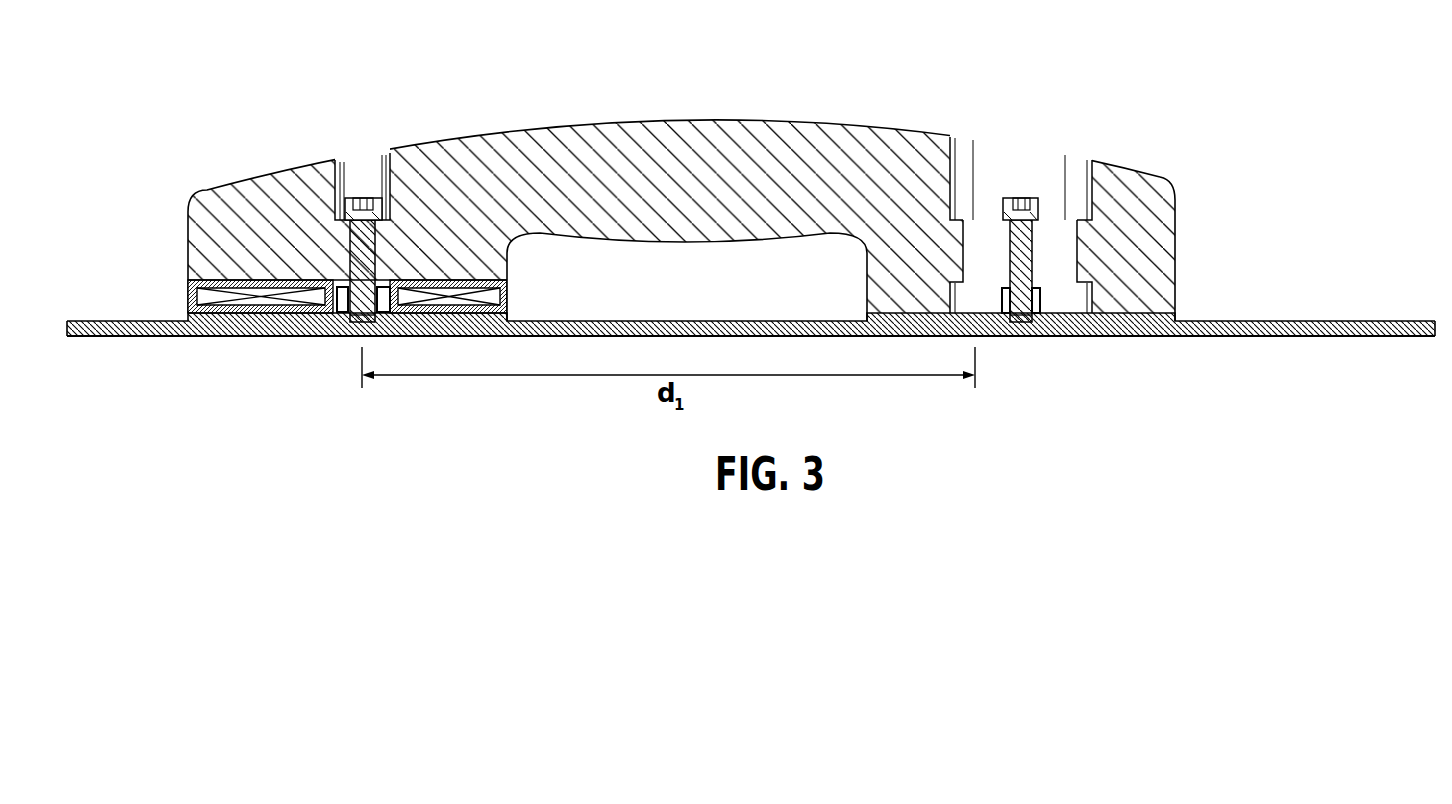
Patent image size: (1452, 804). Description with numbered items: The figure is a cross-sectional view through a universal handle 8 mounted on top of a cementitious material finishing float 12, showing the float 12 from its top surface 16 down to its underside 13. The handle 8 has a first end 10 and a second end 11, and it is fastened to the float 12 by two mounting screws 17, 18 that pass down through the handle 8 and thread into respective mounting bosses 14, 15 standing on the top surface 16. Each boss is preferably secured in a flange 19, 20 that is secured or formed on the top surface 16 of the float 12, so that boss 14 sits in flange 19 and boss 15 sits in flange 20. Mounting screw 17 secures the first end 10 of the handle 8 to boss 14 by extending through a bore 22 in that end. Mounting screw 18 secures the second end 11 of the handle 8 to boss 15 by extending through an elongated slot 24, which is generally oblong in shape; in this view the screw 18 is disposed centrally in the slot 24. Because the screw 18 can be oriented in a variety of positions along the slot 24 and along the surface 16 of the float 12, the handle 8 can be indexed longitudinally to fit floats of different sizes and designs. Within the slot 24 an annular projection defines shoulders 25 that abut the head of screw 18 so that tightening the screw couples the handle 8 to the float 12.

The universal handle 8 is at (751, 209).
The first end of the handle 10 is at (189, 180).
The second end of the handle 11 is at (1181, 171).
The float 12 is at (1388, 313).
The underside of the float 13 is at (1243, 337).
The mounting boss 14 is at (320, 313).
The mounting boss 15 is at (1040, 298).
The top surface of the float 16 is at (1297, 321).
The mounting screw 17 is at (370, 242).
The mounting screw 18 is at (1012, 248).
The flange 19 is at (512, 318).
The flange 20 is at (1174, 320).
The bore 22 is at (383, 157).
The elongated slot 24 is at (1088, 170).
The shoulders 25 is at (1092, 218).